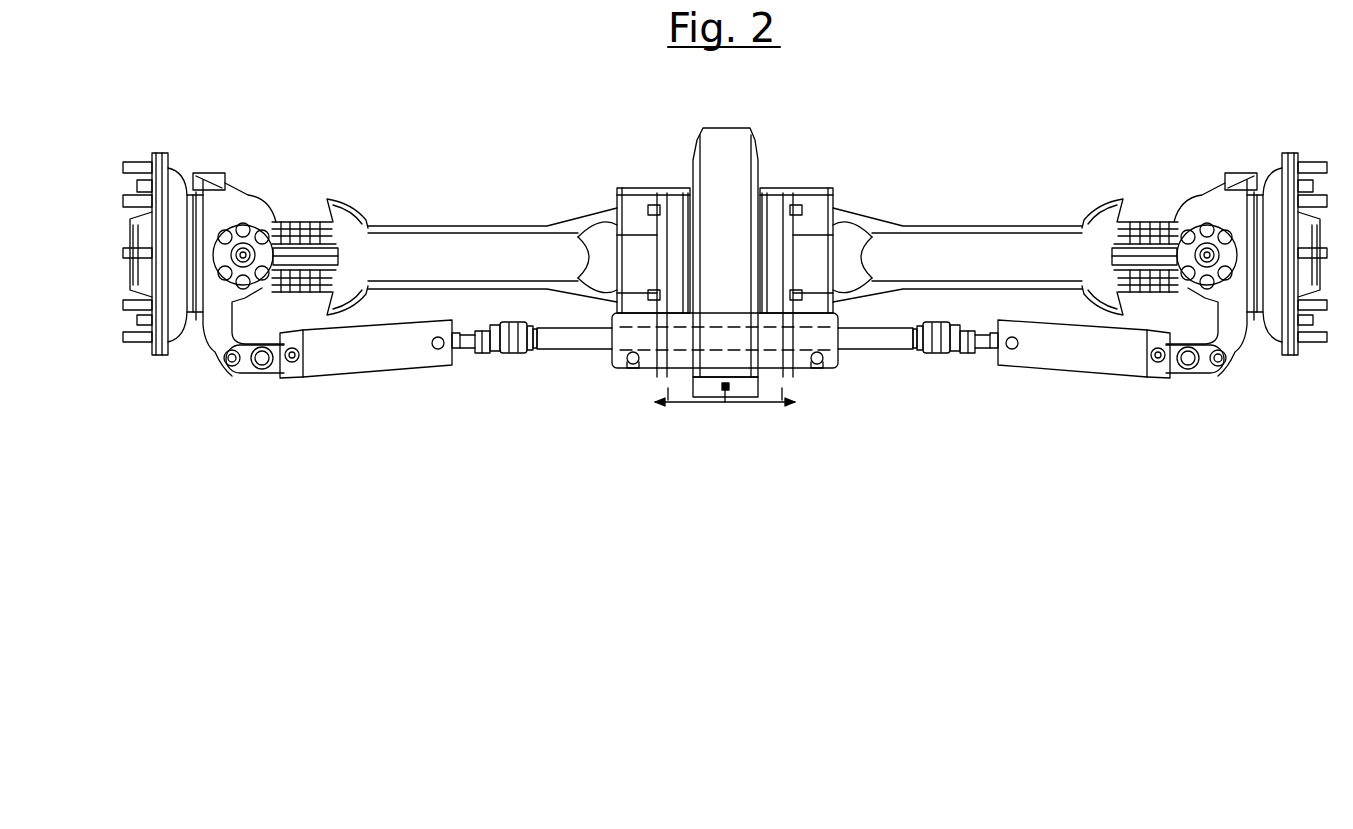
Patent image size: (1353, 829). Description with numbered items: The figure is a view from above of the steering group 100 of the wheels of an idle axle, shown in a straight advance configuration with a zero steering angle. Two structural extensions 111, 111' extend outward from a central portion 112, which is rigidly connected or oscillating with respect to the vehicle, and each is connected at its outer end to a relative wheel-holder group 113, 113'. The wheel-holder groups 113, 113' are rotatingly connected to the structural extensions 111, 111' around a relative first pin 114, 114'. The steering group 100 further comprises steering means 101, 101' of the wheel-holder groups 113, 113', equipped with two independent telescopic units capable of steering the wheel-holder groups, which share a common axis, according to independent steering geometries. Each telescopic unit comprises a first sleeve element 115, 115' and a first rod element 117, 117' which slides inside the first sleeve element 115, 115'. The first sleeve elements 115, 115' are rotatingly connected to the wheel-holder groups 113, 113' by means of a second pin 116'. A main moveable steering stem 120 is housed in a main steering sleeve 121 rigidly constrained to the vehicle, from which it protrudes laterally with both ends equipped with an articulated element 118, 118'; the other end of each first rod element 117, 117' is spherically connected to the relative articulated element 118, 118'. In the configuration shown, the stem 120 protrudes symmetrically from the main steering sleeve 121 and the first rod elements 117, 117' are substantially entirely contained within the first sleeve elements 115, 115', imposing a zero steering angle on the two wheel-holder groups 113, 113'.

The steering group 100 is at (844, 138).
The steering means 101 is at (1039, 421).
The steering means 101' is at (440, 404).
The structural extension 111 is at (1005, 250).
The structural extension 111' is at (444, 244).
The portion rigidly connected or oscillating with respect to the vehicle 112 is at (720, 165).
The wheel-holder group 113 is at (1246, 245).
The wheel-holder group 113' is at (203, 236).
The first pin 114 is at (1193, 219).
The first pin 114' is at (260, 223).
The first sleeve element 115 is at (1084, 379).
The first sleeve element 115' is at (366, 378).
The second pin 116' is at (732, 400).
The first rod element 117 is at (981, 383).
The first rod element 117' is at (506, 389).
The articulated element 118 is at (936, 394).
The articulated element 118' is at (540, 394).
The main moveable steering stem 120 is at (875, 343).
The main steering sleeve 121 is at (618, 367).